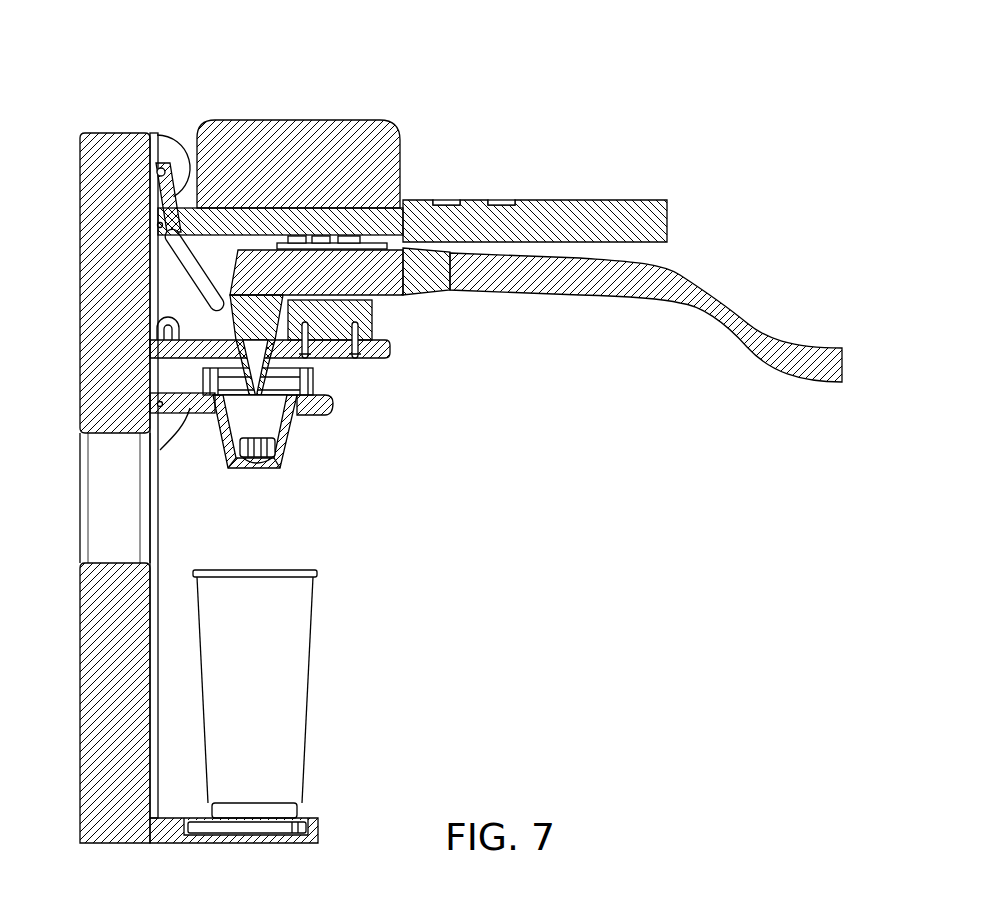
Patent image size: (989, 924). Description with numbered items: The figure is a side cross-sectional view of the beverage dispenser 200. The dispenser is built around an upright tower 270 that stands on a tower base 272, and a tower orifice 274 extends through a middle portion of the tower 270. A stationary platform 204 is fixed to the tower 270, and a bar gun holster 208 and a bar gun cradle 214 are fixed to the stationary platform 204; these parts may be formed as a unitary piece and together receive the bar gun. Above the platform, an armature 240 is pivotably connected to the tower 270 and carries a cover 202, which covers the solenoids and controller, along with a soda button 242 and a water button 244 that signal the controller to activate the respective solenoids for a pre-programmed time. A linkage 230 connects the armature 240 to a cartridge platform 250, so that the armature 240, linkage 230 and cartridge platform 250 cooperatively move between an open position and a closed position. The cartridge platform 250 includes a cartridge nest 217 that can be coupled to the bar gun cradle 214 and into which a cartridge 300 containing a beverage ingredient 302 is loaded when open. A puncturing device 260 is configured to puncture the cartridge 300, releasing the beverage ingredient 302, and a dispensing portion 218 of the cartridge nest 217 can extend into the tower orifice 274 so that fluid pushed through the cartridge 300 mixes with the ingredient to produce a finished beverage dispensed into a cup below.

The dispenser 200 is at (435, 426).
The cover 202 is at (288, 118).
The stationary platform 204 is at (390, 348).
The bar gun holster 208 is at (310, 355).
The bar gun cradle 214 is at (372, 318).
The cartridge nest 217 is at (204, 472).
The dispensing portion 218 is at (278, 447).
The linkage 230 is at (177, 260).
The armature 240 is at (412, 178).
The soda button 242 is at (440, 200).
The water button 244 is at (505, 200).
The cartridge platform 250 is at (333, 404).
The puncturing device 260 is at (265, 405).
The tower 270 is at (97, 322).
The tower base 272 is at (318, 828).
The tower orifice 274 is at (82, 536).
The cartridge 300 is at (290, 440).
The beverage ingredient 302 is at (252, 425).